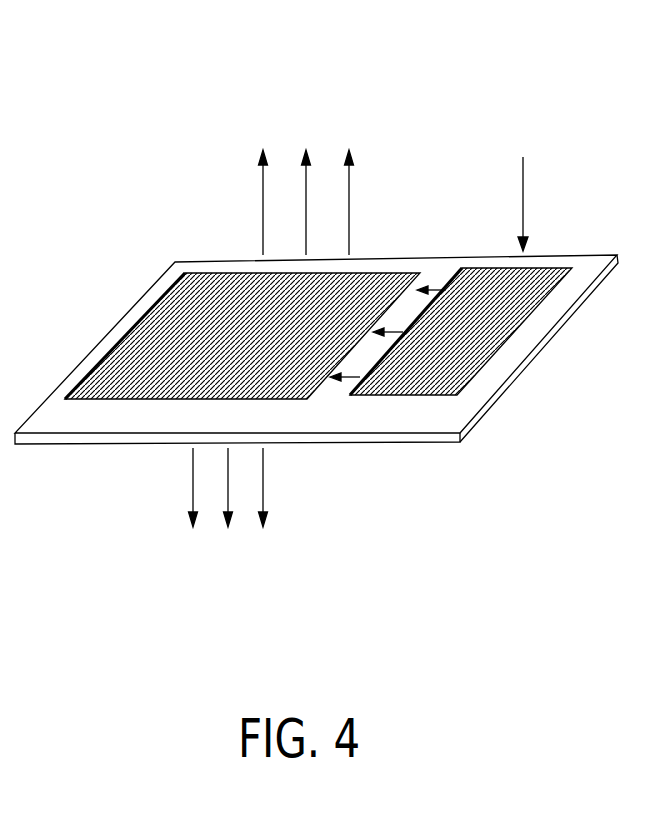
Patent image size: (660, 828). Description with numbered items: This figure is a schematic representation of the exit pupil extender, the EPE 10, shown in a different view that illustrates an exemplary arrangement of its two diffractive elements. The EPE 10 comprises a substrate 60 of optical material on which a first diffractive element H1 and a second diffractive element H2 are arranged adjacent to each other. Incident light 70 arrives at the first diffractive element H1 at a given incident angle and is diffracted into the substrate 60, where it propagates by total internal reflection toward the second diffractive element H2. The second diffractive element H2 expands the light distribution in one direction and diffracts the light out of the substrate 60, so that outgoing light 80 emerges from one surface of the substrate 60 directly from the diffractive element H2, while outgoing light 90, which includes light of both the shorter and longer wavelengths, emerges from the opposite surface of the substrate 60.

The exit pupil extender (EPE) 10 is at (316, 248).
The substrate 60 is at (160, 281).
The incident light 70 is at (523, 207).
The outgoing light 80 is at (258, 138).
The outgoing light 90 is at (185, 535).
The first diffractive element H1 is at (388, 397).
The second diffractive element H2 is at (208, 400).